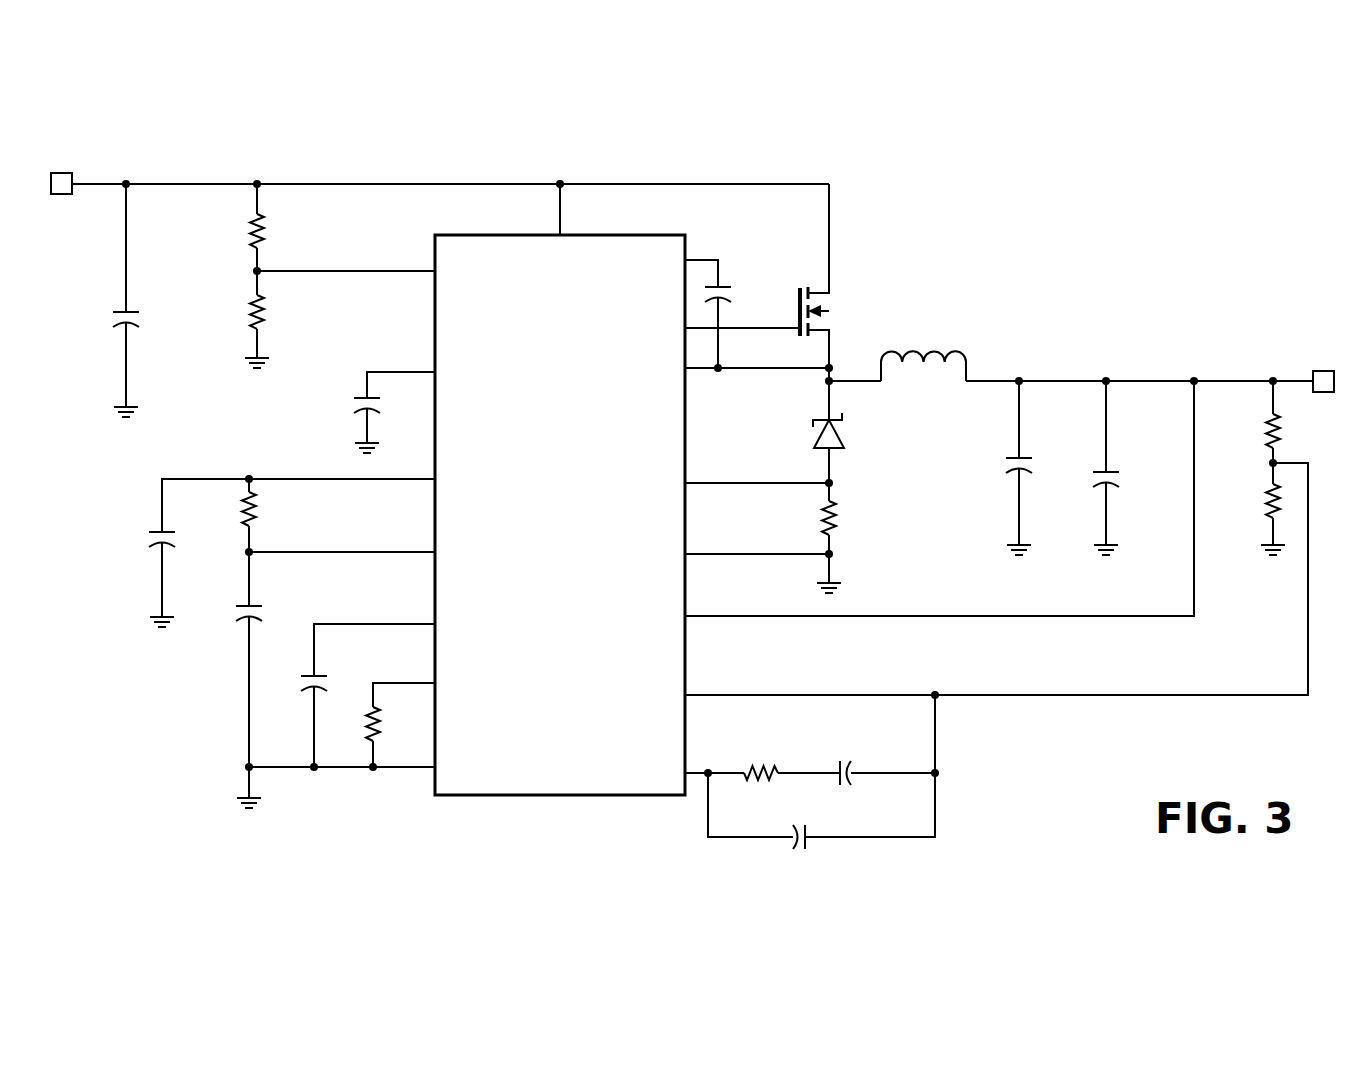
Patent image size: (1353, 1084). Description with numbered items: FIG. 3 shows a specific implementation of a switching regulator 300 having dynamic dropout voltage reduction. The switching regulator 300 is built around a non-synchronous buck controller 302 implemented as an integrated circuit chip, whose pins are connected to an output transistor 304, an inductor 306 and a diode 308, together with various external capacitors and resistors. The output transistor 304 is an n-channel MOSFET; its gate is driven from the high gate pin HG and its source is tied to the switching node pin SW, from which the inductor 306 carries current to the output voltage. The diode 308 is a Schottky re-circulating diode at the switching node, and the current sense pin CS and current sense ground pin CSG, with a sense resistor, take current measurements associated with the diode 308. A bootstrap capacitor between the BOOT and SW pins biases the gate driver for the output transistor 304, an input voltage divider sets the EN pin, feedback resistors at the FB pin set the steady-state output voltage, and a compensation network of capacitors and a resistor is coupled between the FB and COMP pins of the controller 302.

The switching regulator 300 is at (1142, 218).
The non-synchronous buck controller 302 is at (560, 489).
The output transistor 304 is at (811, 312).
The inductor 306 is at (935, 349).
The diode 308 is at (842, 438).